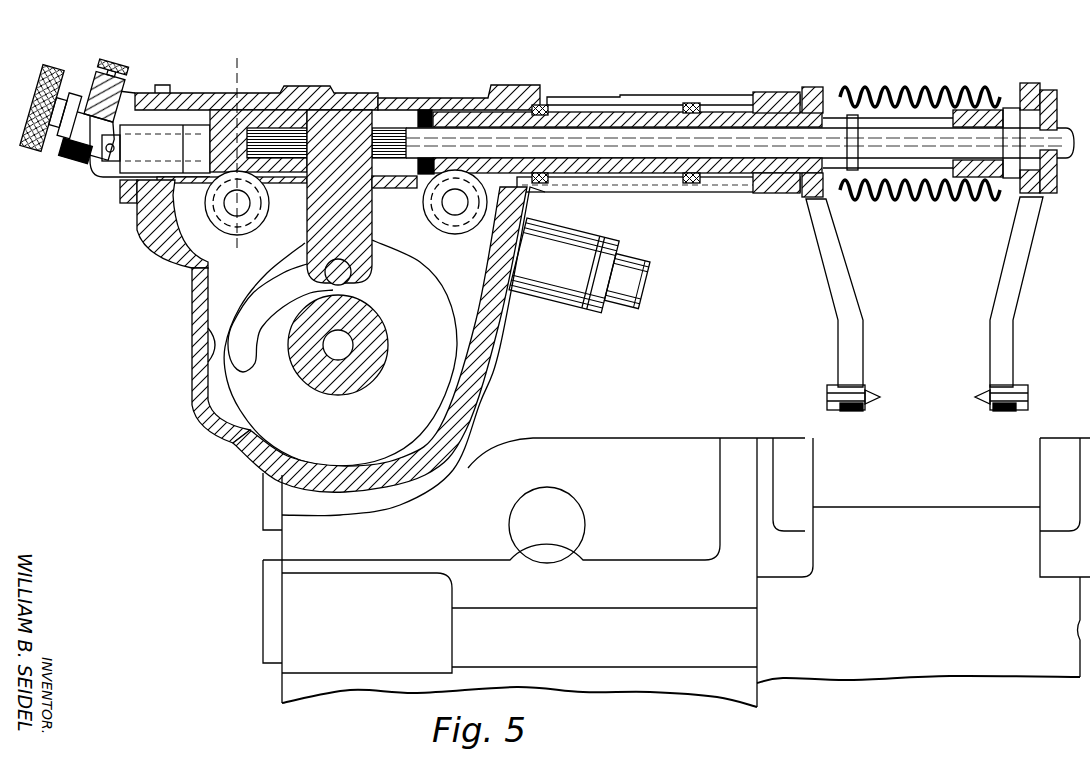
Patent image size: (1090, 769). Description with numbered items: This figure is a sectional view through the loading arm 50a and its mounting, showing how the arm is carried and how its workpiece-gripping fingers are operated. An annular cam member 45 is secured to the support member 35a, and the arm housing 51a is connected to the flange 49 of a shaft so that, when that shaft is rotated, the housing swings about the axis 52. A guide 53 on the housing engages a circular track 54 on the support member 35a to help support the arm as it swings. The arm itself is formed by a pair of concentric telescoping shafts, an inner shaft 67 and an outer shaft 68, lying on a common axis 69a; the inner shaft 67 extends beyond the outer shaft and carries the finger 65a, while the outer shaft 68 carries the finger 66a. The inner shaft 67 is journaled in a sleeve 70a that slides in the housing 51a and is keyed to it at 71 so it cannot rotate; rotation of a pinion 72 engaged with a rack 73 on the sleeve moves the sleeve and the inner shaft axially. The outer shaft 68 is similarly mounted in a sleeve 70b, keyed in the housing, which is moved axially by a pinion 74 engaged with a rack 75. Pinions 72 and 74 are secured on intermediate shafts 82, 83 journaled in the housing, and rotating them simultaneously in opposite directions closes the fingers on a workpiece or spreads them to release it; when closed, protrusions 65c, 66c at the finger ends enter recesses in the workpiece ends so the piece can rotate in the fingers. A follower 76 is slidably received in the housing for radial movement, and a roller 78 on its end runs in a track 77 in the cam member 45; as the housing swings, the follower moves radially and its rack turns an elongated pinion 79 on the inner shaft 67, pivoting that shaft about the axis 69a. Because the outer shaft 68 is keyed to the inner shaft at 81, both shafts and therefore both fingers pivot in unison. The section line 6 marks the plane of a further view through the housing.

The section line 6- 6 is at (258, 246).
The support member 35a is at (510, 338).
The annular cam member 45 is at (326, 432).
The flange 49 is at (398, 337).
The loading arm 50a is at (701, 80).
The housing 51a is at (190, 327).
The axis 52 is at (338, 345).
The guide 53 is at (457, 472).
The circular track 54 is at (322, 514).
The finger 65a is at (1001, 279).
The protrusion 65c is at (975, 395).
The finger 66a is at (821, 263).
The protrusion 66c is at (881, 398).
The inner shaft 67 is at (737, 153).
The outer shaft 68 is at (745, 180).
The axis 69a is at (553, 143).
The sleeve 70a is at (238, 96).
The sleeve 70b is at (440, 107).
The key 71 is at (187, 179).
The pinion 72 is at (202, 237).
The rack 73 is at (212, 178).
The pinion 74 is at (477, 214).
The rack 75 is at (487, 172).
The follower 76 is at (373, 205).
The track 77 is at (292, 278).
The roller 78 is at (352, 280).
The elongated pinion 79 is at (337, 143).
The key 81 is at (960, 142).
The intermediate shaft 82 is at (250, 203).
The intermediate shaft 83 is at (452, 213).